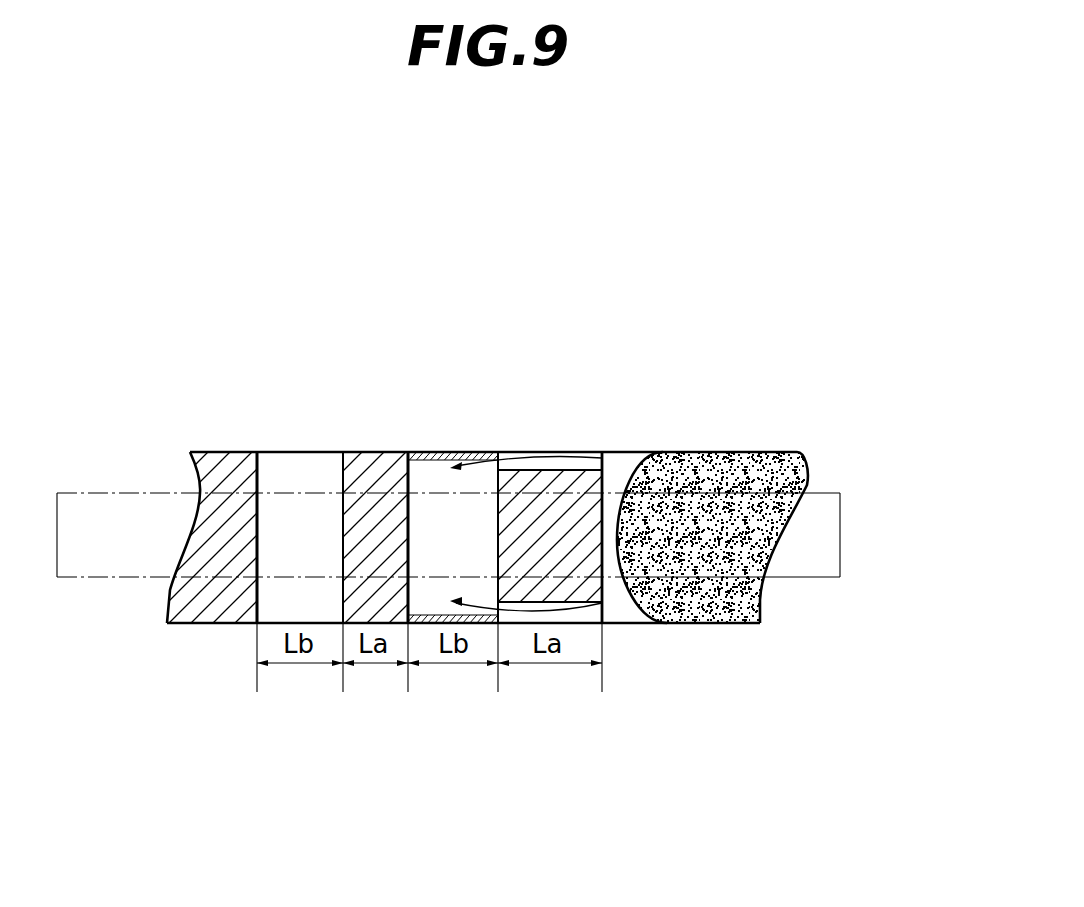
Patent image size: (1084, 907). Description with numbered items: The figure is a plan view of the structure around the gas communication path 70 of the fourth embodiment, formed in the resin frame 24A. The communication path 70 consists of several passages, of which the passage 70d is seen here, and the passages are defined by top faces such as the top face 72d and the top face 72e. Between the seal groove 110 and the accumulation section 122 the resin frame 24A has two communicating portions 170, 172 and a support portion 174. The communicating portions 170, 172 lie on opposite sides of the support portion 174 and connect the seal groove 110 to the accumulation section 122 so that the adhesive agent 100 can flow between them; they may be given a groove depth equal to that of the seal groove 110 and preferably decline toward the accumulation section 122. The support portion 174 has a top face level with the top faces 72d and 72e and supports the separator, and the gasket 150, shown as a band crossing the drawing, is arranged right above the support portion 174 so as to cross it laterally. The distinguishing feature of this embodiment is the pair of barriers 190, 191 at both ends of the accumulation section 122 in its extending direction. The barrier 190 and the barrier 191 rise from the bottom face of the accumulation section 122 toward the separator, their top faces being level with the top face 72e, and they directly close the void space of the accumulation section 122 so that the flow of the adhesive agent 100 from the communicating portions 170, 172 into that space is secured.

The communication path 70 is at (317, 350).
The passage 70d is at (298, 452).
The top face 72d is at (220, 452).
The top face 72e is at (380, 452).
The accumulation section 122 is at (425, 478).
The barrier 190 is at (473, 447).
The barrier 191 is at (436, 620).
The communicating portion 170 is at (560, 452).
The communicating portion 172 is at (586, 613).
The support portion 174 is at (572, 505).
The seal groove 110 is at (625, 460).
The adhesive agent 100 is at (767, 450).
The gasket 150 is at (840, 548).
The resin frame 24A is at (214, 637).